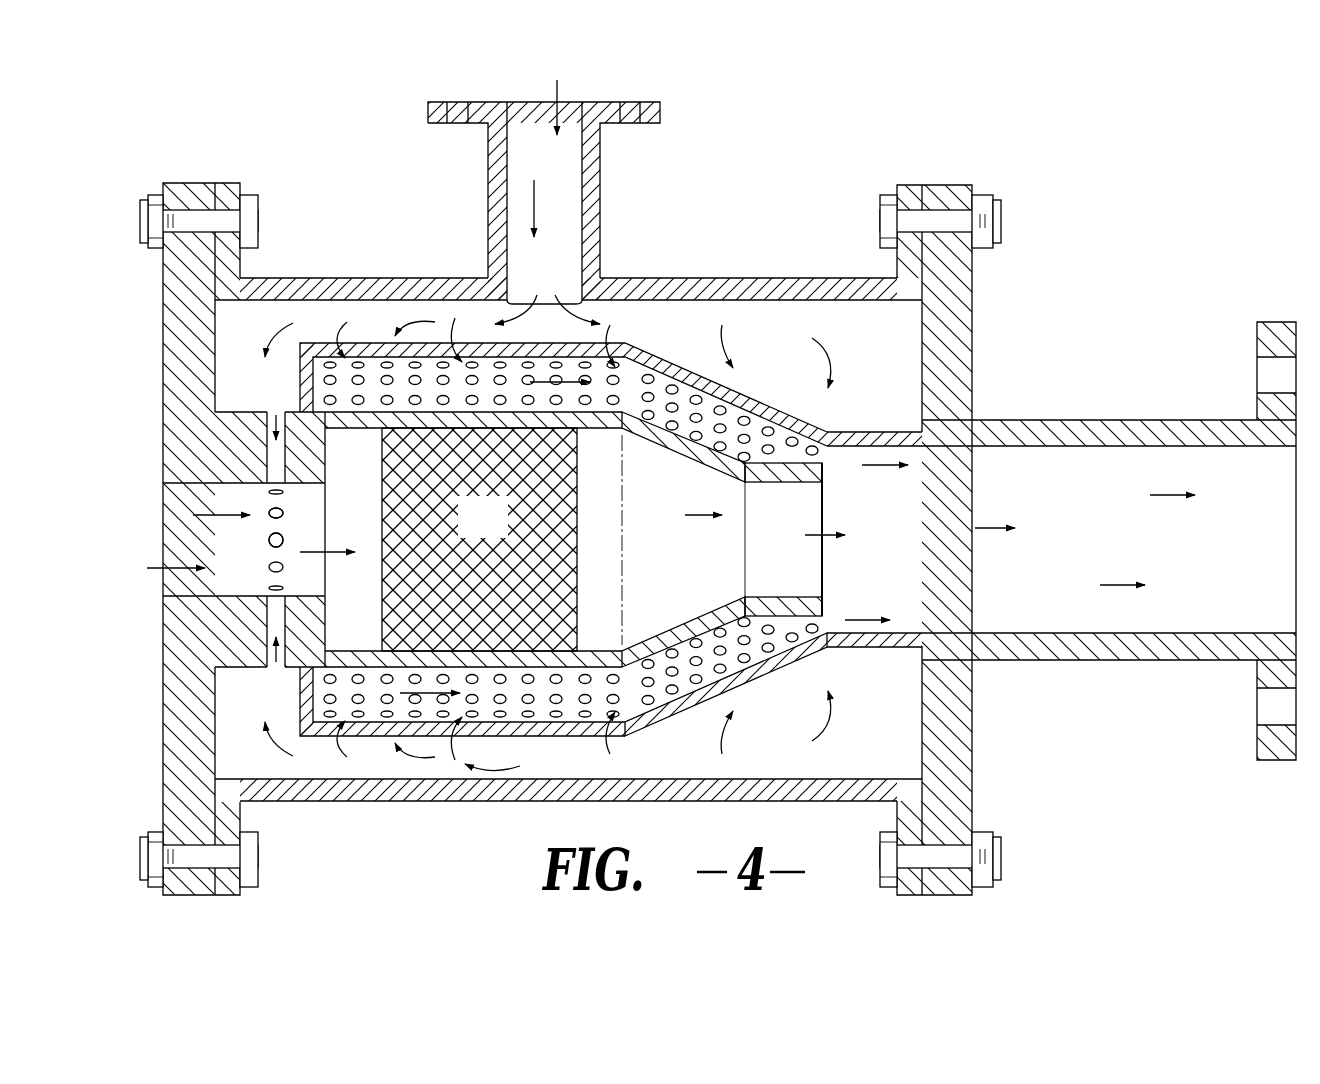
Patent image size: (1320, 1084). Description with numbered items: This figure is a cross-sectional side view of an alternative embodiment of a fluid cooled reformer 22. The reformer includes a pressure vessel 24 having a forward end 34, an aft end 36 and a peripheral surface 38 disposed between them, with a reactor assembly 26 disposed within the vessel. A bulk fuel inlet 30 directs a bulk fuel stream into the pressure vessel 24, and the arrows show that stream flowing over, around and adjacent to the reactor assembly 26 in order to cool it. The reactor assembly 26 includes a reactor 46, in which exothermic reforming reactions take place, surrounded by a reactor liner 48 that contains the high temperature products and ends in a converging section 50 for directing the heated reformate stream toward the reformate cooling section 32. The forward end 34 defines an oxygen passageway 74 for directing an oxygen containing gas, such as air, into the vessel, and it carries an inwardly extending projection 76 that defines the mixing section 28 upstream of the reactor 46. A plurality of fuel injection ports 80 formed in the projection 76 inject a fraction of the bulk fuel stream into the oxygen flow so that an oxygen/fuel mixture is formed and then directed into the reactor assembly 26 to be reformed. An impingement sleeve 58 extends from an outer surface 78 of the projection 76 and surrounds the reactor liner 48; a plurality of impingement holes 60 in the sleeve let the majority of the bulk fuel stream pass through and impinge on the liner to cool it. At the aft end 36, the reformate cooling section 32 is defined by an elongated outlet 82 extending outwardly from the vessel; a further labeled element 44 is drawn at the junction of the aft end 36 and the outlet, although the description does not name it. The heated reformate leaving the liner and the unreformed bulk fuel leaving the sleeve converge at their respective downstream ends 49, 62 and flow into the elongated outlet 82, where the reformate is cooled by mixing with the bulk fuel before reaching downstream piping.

The fluid cooled reformer 22 is at (1134, 228).
The pressure vessel 24 is at (313, 272).
The reactor assembly 26 is at (497, 537).
The mixing section 28 is at (319, 530).
The bulk fuel inlet 30 is at (563, 207).
The reformate cooling section 32 is at (1032, 664).
The forward end 34 is at (167, 342).
The aft end 36 is at (962, 313).
The peripheral surface 38 is at (750, 283).
The outlet sleeve wall 44 is at (951, 415).
The reactor 46 is at (543, 626).
The reactor liner 48 is at (565, 420).
The downstream end of the reactor liner 49 is at (797, 593).
The converging section 50 is at (677, 447).
The impingement sleeve 58 is at (400, 740).
The impingement holes 60 is at (777, 670).
The downstream end of the impingement sleeve 62 is at (900, 633).
The oxygen passageway 74 is at (182, 498).
The inwardly extending projection 76 is at (317, 632).
The outer surface of the projection 78 is at (237, 670).
The fuel injection ports 80 is at (275, 540).
The elongated outlet 82 is at (1103, 428).